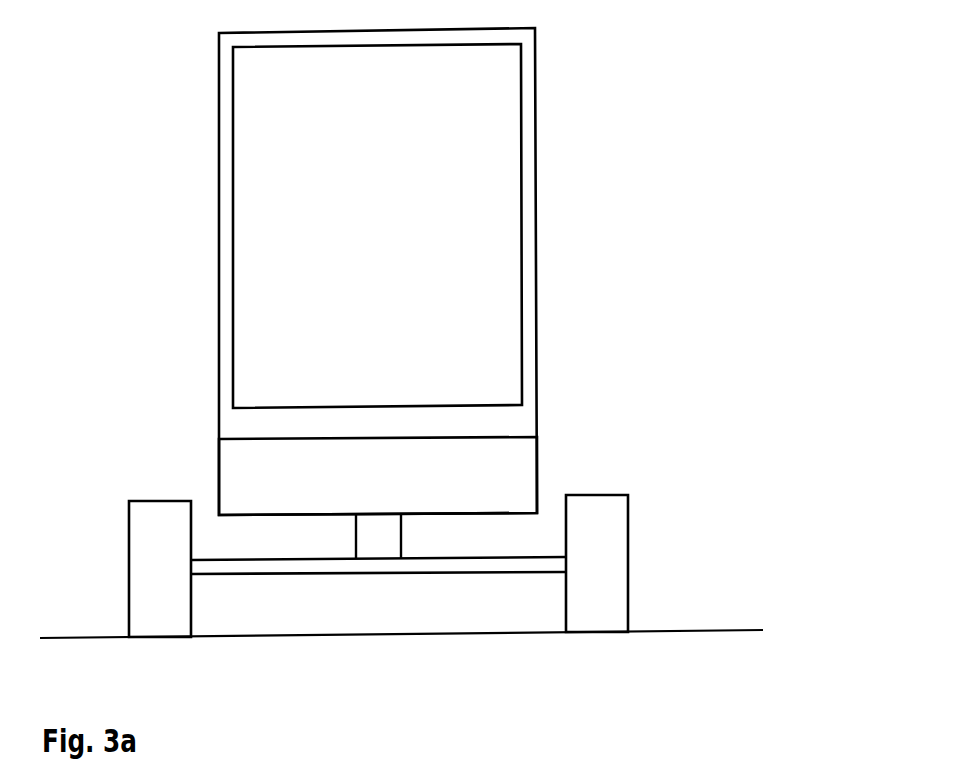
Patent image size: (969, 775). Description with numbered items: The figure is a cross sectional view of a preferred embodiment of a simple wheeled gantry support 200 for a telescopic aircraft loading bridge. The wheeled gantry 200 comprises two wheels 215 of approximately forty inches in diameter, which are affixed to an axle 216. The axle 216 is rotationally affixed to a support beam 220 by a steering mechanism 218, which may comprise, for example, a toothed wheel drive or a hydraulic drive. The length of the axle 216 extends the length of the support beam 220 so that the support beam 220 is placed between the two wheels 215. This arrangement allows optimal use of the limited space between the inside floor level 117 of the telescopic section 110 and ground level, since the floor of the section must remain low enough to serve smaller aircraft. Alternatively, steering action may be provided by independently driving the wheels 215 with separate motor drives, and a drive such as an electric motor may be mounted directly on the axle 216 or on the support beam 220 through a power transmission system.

The wheeled gantry support 200 is at (712, 69).
The third telescopic section 110 is at (218, 167).
The inside floor level 117 is at (353, 407).
The support beam 220 is at (475, 483).
The steering mechanism 218 is at (370, 543).
The axle 216 is at (250, 577).
The wheels 215 is at (160, 500).